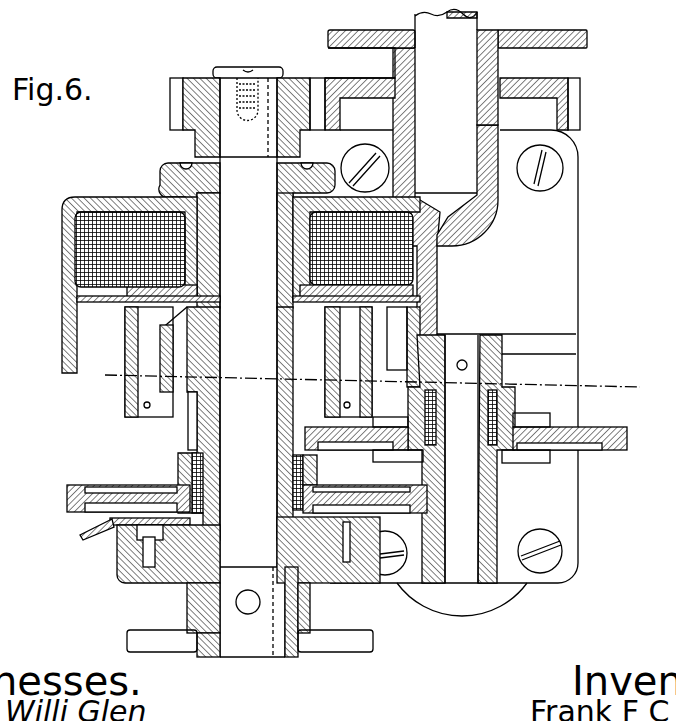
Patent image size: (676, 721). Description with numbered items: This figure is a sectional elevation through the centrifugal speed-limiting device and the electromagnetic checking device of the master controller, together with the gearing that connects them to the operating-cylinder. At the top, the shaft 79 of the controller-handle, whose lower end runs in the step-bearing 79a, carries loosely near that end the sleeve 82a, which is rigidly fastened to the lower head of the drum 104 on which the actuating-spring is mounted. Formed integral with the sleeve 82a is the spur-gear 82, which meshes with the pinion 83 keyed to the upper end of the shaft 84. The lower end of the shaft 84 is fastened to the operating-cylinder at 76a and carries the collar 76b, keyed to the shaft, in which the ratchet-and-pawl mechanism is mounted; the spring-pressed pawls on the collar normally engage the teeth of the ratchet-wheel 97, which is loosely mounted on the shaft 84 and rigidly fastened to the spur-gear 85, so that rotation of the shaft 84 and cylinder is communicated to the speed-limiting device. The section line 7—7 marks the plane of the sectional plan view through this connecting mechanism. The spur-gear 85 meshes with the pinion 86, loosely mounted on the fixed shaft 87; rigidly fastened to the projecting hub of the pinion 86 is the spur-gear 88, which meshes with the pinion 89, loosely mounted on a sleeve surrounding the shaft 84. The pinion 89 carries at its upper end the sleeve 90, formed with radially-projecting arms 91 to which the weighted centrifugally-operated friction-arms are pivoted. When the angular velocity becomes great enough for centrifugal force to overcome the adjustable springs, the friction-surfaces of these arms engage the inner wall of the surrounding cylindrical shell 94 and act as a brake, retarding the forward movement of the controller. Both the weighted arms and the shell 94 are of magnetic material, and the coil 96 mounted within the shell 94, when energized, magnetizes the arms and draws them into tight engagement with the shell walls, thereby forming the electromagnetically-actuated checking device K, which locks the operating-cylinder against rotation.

The pinion 83 is at (191, 81).
The spur-gear 82 is at (576, 108).
The sleeve 82a is at (392, 63).
The drum 104 is at (558, 48).
The shaft 79 is at (463, 178).
The step-bearing 79a is at (490, 222).
The fixed shaft 87 is at (466, 352).
The section line 7- 7 is at (352, 383).
The spur-gear 88 is at (628, 438).
The pinion 86 is at (497, 493).
The electromagnetically-actuated checking device K is at (117, 267).
The coil 96 is at (105, 220).
The cylindrical shell 94 is at (68, 319).
The sleeve 90 is at (158, 372).
The radially-projecting arms 91 is at (128, 401).
The pinion 89 is at (193, 423).
The shaft 84 is at (233, 432).
The spur-gear 85 is at (74, 490).
The collar 76b is at (120, 578).
The ratchet-wheel 97 is at (168, 554).
The fastening of shaft to operating-cylinder 76a is at (248, 606).